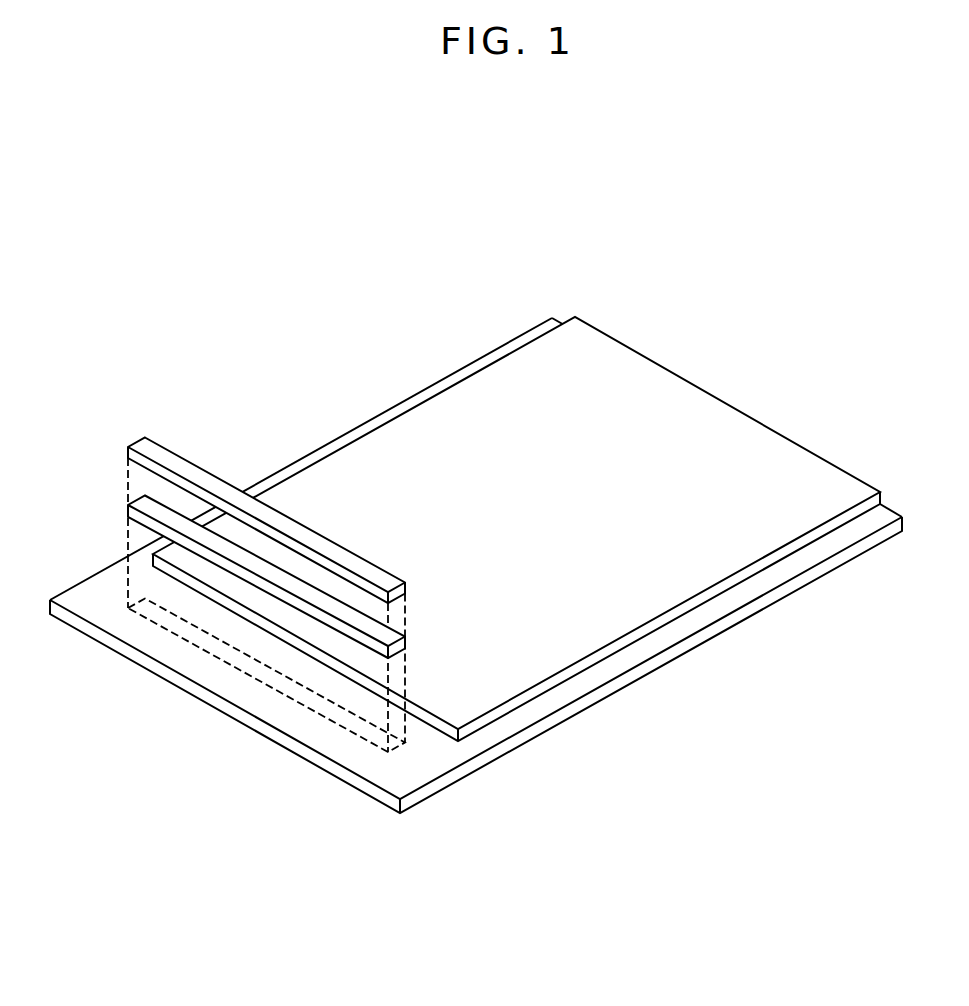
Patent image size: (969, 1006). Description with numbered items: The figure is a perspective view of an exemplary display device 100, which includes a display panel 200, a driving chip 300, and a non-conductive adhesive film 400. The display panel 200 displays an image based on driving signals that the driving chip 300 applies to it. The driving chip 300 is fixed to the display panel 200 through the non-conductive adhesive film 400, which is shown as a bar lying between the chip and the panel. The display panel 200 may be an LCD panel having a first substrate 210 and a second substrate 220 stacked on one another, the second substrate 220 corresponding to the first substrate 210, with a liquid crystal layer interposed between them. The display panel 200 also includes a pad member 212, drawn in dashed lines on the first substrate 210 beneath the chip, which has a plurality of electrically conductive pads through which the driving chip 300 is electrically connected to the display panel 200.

The display device 100 is at (434, 292).
The display panel 200 is at (759, 660).
The first substrate 210 is at (628, 658).
The pad member 212 is at (326, 722).
The second substrate 220 is at (648, 594).
The driving chip 300 is at (137, 444).
The non-conductive adhesive film 400 is at (137, 502).